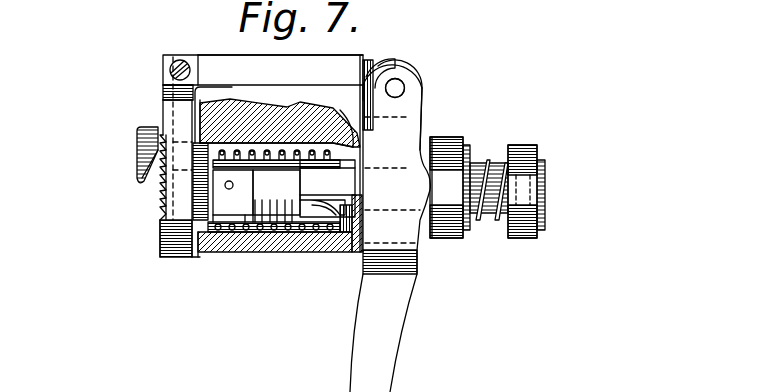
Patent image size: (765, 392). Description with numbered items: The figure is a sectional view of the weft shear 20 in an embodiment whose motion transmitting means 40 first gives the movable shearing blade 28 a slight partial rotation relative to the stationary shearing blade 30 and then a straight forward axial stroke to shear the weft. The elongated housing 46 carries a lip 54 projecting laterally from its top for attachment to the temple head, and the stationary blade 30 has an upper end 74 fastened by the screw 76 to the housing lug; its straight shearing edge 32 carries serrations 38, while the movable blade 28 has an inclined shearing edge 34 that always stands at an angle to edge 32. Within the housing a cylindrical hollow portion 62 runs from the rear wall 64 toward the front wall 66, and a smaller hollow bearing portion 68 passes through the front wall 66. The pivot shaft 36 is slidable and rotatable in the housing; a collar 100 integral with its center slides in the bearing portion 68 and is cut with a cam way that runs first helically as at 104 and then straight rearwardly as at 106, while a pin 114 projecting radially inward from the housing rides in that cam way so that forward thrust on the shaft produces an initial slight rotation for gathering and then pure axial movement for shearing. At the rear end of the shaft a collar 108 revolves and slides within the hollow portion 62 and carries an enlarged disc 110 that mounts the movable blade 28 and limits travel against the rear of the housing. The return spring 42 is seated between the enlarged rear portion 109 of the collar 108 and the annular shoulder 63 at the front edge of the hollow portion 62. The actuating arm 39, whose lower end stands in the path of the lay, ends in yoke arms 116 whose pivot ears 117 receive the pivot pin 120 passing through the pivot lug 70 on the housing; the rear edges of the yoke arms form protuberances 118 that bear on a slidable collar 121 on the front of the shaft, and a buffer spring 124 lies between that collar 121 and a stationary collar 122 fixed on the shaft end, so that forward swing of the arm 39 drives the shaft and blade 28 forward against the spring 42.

The weft shear 20 is at (143, 108).
The movable shearing blade 28 is at (150, 135).
The stationary shearing blade 30 is at (160, 190).
The straight shearing edge 32 is at (160, 178).
The shearing edge 34 is at (143, 158).
The shaft 36 is at (276, 192).
The serrations 38 is at (160, 206).
The actuating arm 39 is at (375, 352).
The motion transmitting means 40 is at (352, 158).
The spring 42 is at (267, 224).
The housing 46 is at (225, 118).
The lip 54 is at (275, 67).
The cylindrical hollow portion 62 is at (290, 230).
The annular shoulder 63 is at (340, 237).
The rear wall 64 is at (204, 94).
The front wall 66 is at (342, 113).
The hollow bearing portion 68 is at (357, 135).
The pivot lug 70 is at (396, 86).
The upper end 74 is at (163, 86).
The screw 76 is at (178, 61).
The collar 100 is at (327, 188).
The helical cam way portion 104 is at (338, 212).
The straight cam way portion 106 is at (322, 198).
The collar 108 is at (233, 192).
The enlarged rear portion 109 is at (197, 253).
The disc 110 is at (157, 222).
The pin 114 is at (343, 245).
The yoke arms 116 is at (366, 148).
The pivot ears 117 is at (412, 88).
The protuberances 118 is at (420, 202).
The pivot pin 120 is at (424, 82).
The slidable collar 121 is at (455, 245).
The stationary collar 122 is at (535, 165).
The buffer spring 124 is at (493, 163).